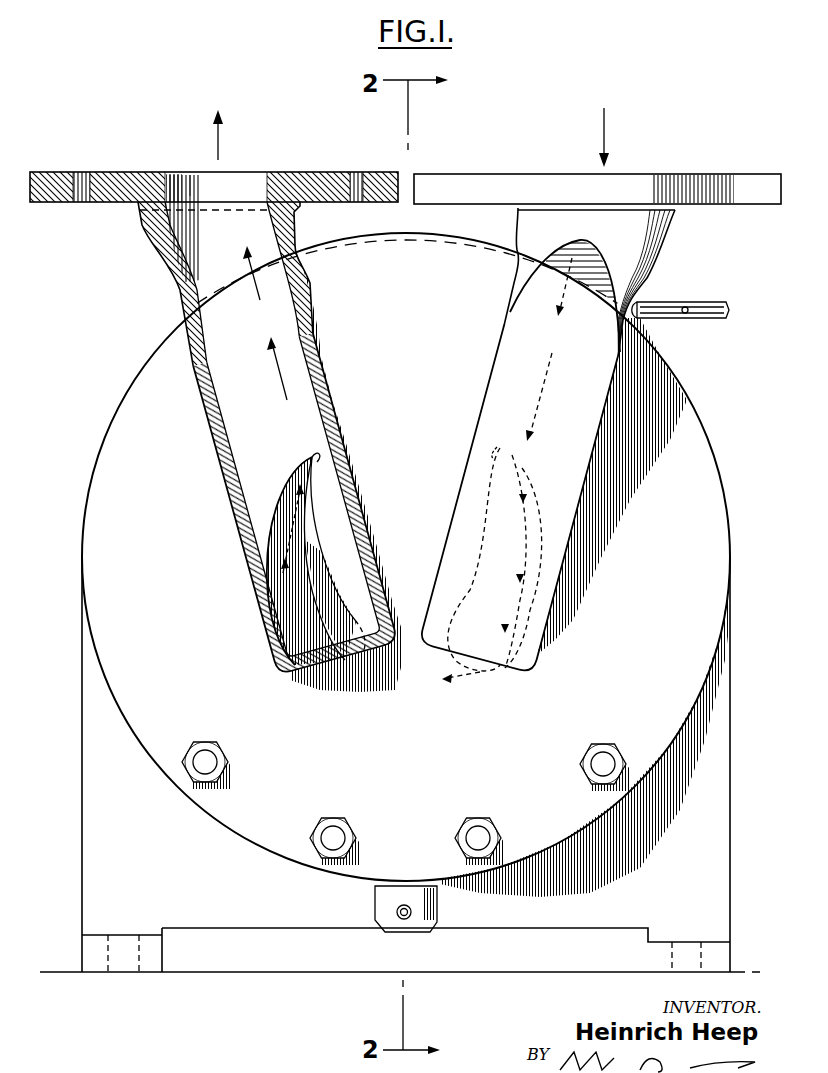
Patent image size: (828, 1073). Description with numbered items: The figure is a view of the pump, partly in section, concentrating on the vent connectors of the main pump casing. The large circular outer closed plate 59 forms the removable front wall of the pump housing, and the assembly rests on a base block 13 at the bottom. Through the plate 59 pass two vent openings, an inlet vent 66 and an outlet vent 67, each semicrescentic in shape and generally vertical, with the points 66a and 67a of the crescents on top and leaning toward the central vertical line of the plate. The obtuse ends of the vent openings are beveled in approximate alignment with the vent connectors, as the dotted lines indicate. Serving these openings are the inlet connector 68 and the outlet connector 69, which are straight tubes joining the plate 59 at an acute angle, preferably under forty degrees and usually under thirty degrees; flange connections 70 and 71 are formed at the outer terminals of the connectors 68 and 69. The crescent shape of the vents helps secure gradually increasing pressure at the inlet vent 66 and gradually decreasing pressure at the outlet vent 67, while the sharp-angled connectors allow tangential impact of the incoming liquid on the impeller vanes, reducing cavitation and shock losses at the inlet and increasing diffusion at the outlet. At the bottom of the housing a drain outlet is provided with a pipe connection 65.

The base block 13 is at (157, 959).
The outer closed plate 59 is at (720, 554).
The pipe connection 65 is at (412, 931).
The inlet vent opening 66 is at (284, 492).
The point of inlet crescent 66a is at (313, 455).
The outlet vent opening 67 is at (545, 515).
The point of outlet crescent 67a is at (487, 462).
The inlet vent connector 68 is at (228, 484).
The outlet vent connector 69 is at (482, 402).
The flange connection 70 is at (133, 171).
The flange connection 71 is at (654, 174).